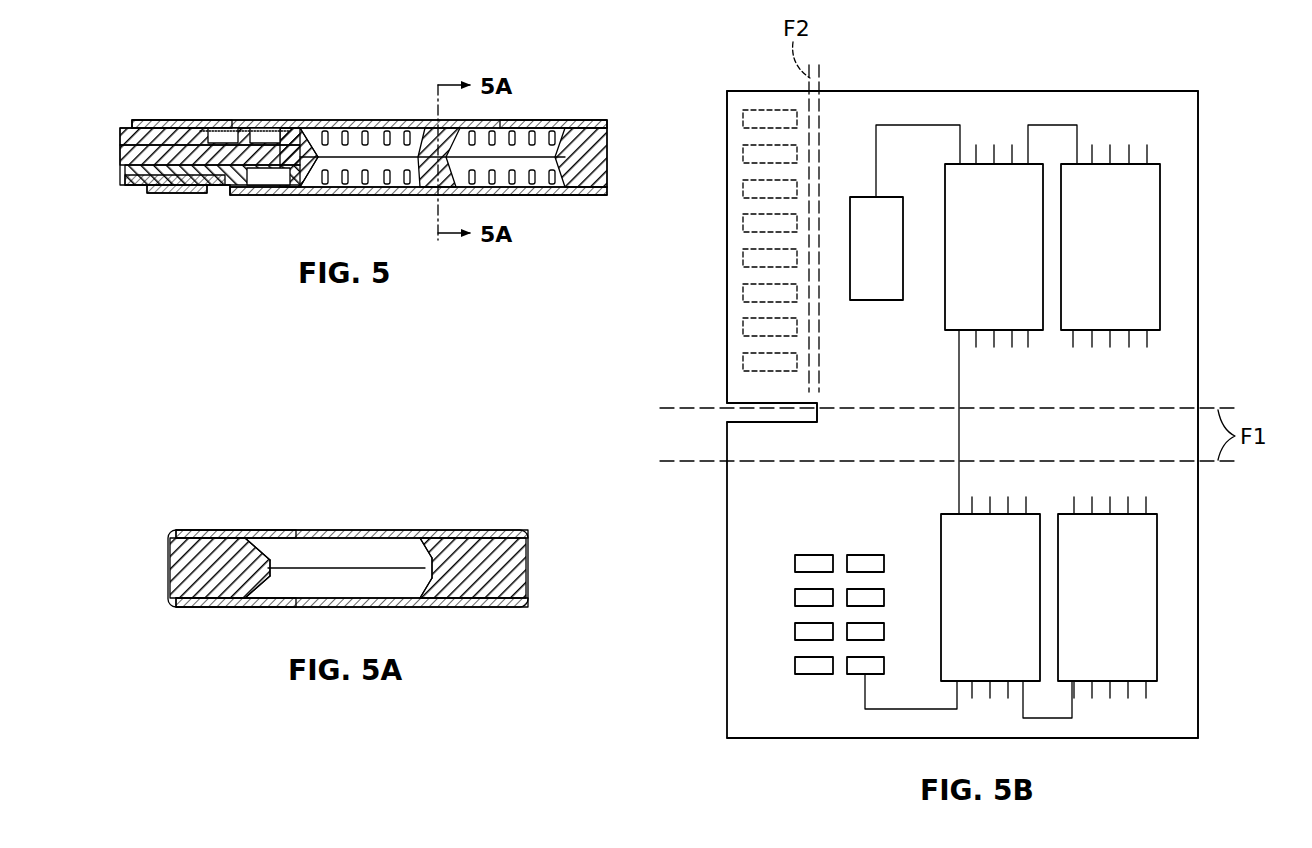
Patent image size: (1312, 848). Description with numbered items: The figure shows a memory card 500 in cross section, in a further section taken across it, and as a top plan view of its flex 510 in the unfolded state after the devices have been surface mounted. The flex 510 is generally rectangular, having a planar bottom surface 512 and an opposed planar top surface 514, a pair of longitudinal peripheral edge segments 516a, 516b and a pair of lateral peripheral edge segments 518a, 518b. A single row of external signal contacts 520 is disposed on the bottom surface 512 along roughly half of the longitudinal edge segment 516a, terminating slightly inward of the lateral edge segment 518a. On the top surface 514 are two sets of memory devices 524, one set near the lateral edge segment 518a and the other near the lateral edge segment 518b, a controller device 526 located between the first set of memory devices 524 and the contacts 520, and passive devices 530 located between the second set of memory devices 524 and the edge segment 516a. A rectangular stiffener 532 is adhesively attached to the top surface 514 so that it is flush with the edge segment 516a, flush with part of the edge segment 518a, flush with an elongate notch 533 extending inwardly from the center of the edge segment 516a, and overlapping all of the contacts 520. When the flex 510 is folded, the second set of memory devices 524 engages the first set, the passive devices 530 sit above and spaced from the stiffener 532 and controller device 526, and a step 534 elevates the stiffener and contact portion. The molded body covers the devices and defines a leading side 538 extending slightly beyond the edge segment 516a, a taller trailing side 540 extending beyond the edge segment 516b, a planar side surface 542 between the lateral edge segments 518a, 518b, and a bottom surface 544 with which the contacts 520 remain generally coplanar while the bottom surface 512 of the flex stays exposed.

In FIG. 5, the memory card 500 is at (592, 85).
In FIG. 5A, the memory card 500 is at (500, 528).
In FIG. 5, the flex 510 is at (532, 205).
In FIG. 5A, the flex 510 is at (376, 528).
In FIG. 5B, the flex 510 is at (1152, 88).
In FIG. 5, the bottom surface 512 is at (570, 197).
In FIG. 5B, the top surface 514 is at (1180, 370).
In FIG. 5, the longitudinal peripheral edge segment 516a is at (130, 120).
In FIG. 5B, the longitudinal peripheral edge segment 516a is at (727, 372).
In FIG. 5, the longitudinal peripheral edge segment 516b is at (600, 122).
In FIG. 5B, the longitudinal peripheral edge segment 516b is at (1200, 490).
In FIG. 5A, the lateral peripheral edge segment 518a is at (172, 606).
In FIG. 5B, the lateral peripheral edge segment 518a is at (968, 91).
In FIG. 5A, the lateral peripheral edge segment 518b is at (172, 530).
In FIG. 5B, the lateral peripheral edge segment 518b is at (1152, 738).
In FIG. 5, the external signal contacts 520 is at (175, 196).
In FIG. 5B, the external signal contacts 520 is at (745, 295).
In FIG. 5, the memory devices 524 is at (382, 170).
In FIG. 5A, the memory devices 524 is at (300, 582).
In FIG. 5B, the memory devices 524 is at (1050, 421).
In FIG. 5, the controller device 526 is at (272, 185).
In FIG. 5B, the controller device 526 is at (885, 205).
In FIG. 5, the passive devices 530 is at (222, 128).
In FIG. 5B, the passive devices 530 is at (800, 630).
In FIG. 5, the stiffener 532 is at (126, 160).
In FIG. 5B, the notch 533 is at (740, 410).
In FIG. 5, the step 534 is at (229, 196).
In FIG. 5, the leading side 538 is at (120, 140).
In FIG. 5, the trailing side 540 is at (610, 145).
In FIG. 5A, the side surface 542 is at (168, 562).
In FIG. 5, the bottom surface 544 is at (126, 182).